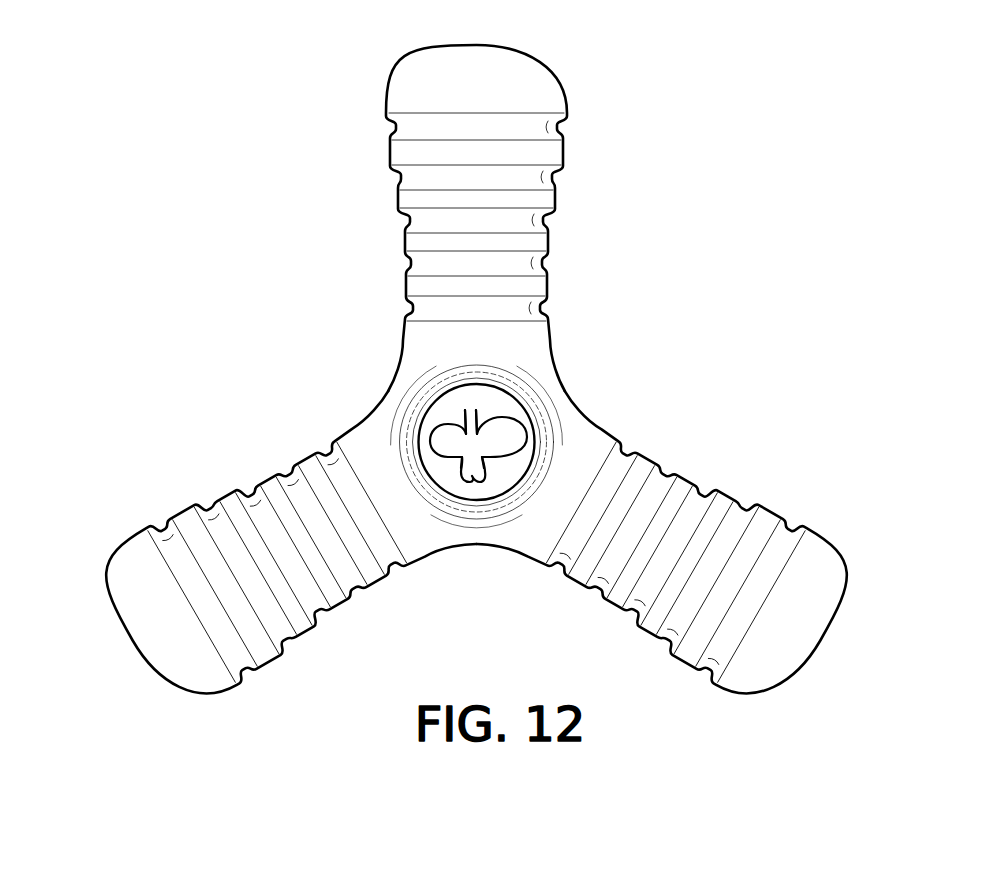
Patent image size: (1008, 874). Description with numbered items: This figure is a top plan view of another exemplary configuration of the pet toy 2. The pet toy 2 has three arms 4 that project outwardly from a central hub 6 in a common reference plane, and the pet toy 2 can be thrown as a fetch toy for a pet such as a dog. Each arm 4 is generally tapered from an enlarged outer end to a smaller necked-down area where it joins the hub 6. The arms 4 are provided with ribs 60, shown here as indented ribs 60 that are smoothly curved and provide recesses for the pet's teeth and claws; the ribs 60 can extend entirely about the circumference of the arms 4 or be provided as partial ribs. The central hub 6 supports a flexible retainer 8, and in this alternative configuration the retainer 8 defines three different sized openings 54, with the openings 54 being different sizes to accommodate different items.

The pet toy 2 is at (818, 132).
The arm 4 is at (533, 67).
The central hub 6 is at (557, 382).
The flexible retainer 8 is at (471, 420).
The openings 54 is at (447, 437).
The ribs 60 is at (558, 129).